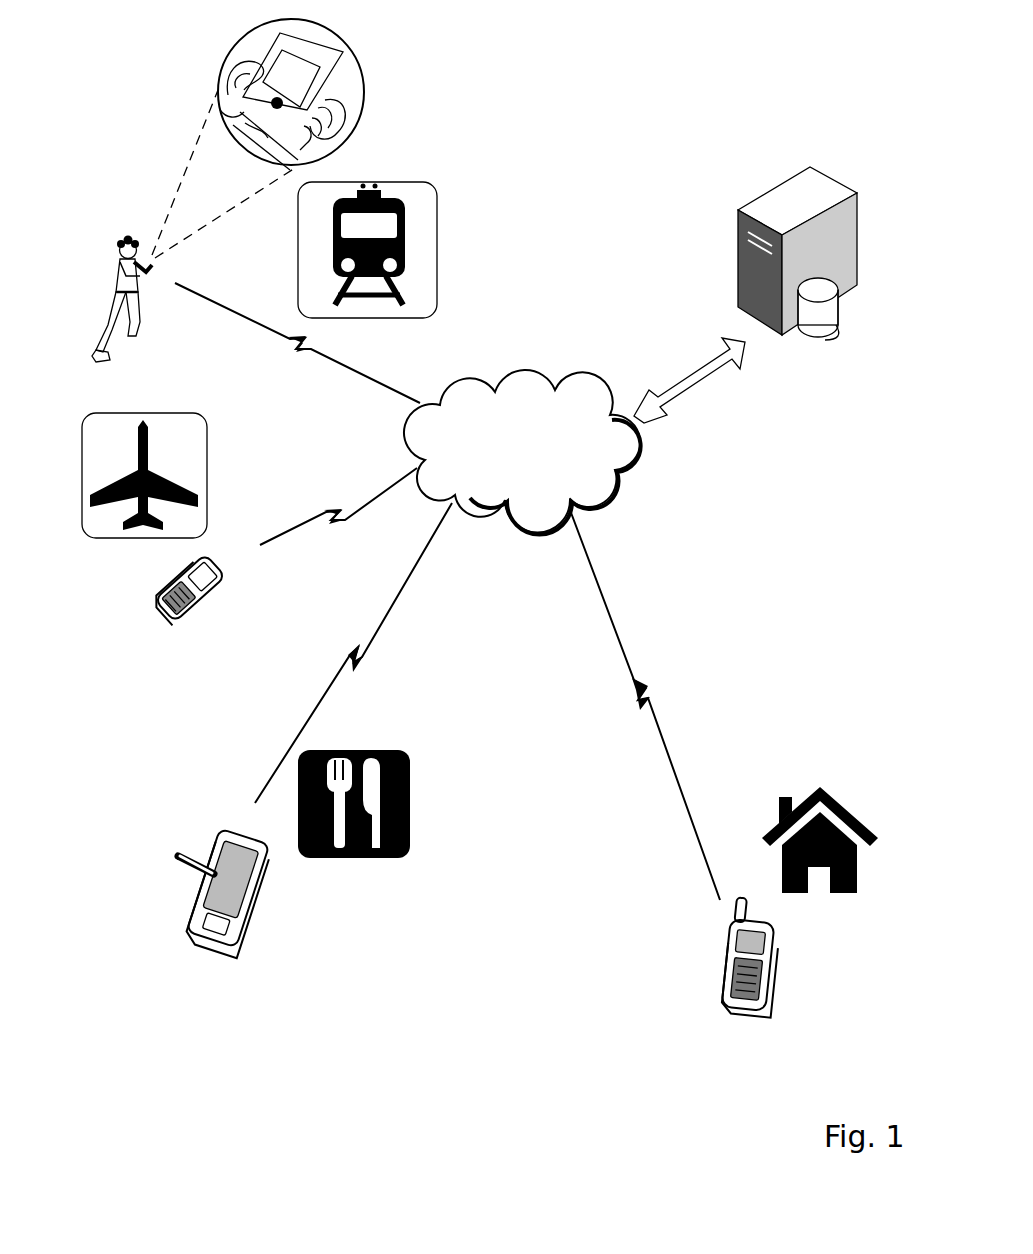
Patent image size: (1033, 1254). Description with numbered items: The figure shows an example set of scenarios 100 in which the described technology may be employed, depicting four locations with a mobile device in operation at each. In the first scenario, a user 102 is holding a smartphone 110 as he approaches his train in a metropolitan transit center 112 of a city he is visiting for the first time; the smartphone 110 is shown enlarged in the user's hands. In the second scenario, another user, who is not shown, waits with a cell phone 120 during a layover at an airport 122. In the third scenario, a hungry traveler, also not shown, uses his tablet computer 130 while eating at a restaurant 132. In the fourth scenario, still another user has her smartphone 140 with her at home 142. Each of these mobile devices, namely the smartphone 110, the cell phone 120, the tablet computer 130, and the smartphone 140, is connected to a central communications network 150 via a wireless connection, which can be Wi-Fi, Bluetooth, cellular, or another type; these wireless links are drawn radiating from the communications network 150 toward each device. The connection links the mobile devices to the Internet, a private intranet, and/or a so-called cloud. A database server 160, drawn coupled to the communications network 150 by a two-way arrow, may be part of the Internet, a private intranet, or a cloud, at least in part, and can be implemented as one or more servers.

The set of scenarios 100 is at (792, 64).
The user 102 is at (127, 355).
The smartphone 110 is at (312, 46).
The metropolitan transit center 112 is at (415, 217).
The cell phone 120 is at (158, 637).
The airport 122 is at (195, 457).
The tablet computer 130 is at (217, 950).
The restaurant 132 is at (393, 852).
The smartphone 140 is at (742, 1037).
The home 142 is at (850, 887).
The communications network 150 is at (496, 467).
The database server 160 is at (827, 265).